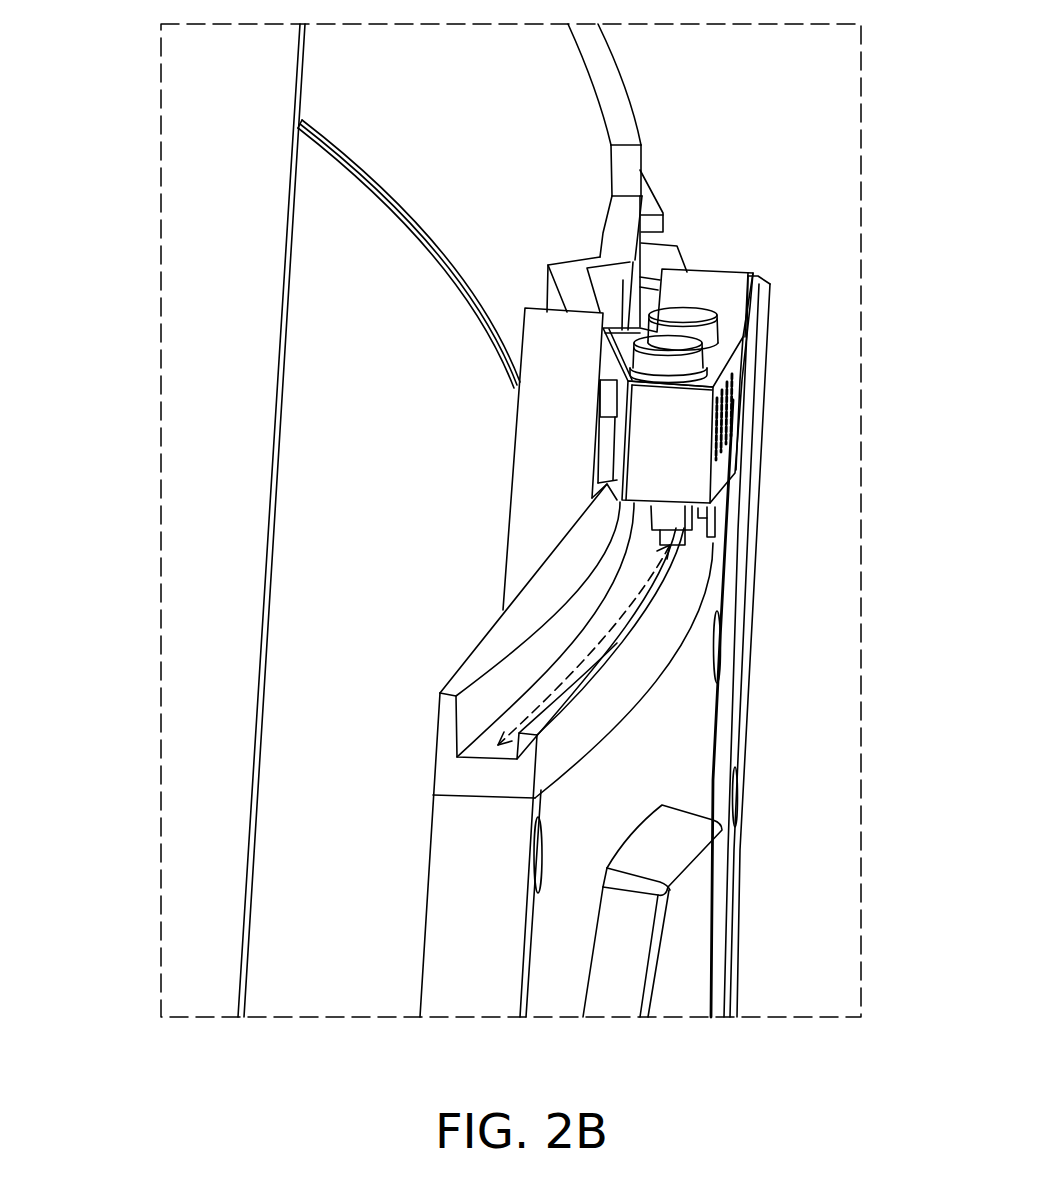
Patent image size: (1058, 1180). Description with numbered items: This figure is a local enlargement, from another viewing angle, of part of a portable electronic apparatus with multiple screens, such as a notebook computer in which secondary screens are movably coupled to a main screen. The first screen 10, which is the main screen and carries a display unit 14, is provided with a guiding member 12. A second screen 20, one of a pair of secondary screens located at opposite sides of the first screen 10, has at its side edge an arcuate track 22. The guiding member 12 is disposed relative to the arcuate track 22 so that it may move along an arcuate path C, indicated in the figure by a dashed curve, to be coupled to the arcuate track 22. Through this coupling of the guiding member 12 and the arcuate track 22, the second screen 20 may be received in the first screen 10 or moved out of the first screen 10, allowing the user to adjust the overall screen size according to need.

The first screen 10 is at (300, 48).
The display unit 14 is at (323, 200).
The guiding member 12 is at (720, 290).
The second screen 20 is at (473, 885).
The arcuate track 22 is at (493, 750).
The arcuate path C is at (627, 622).